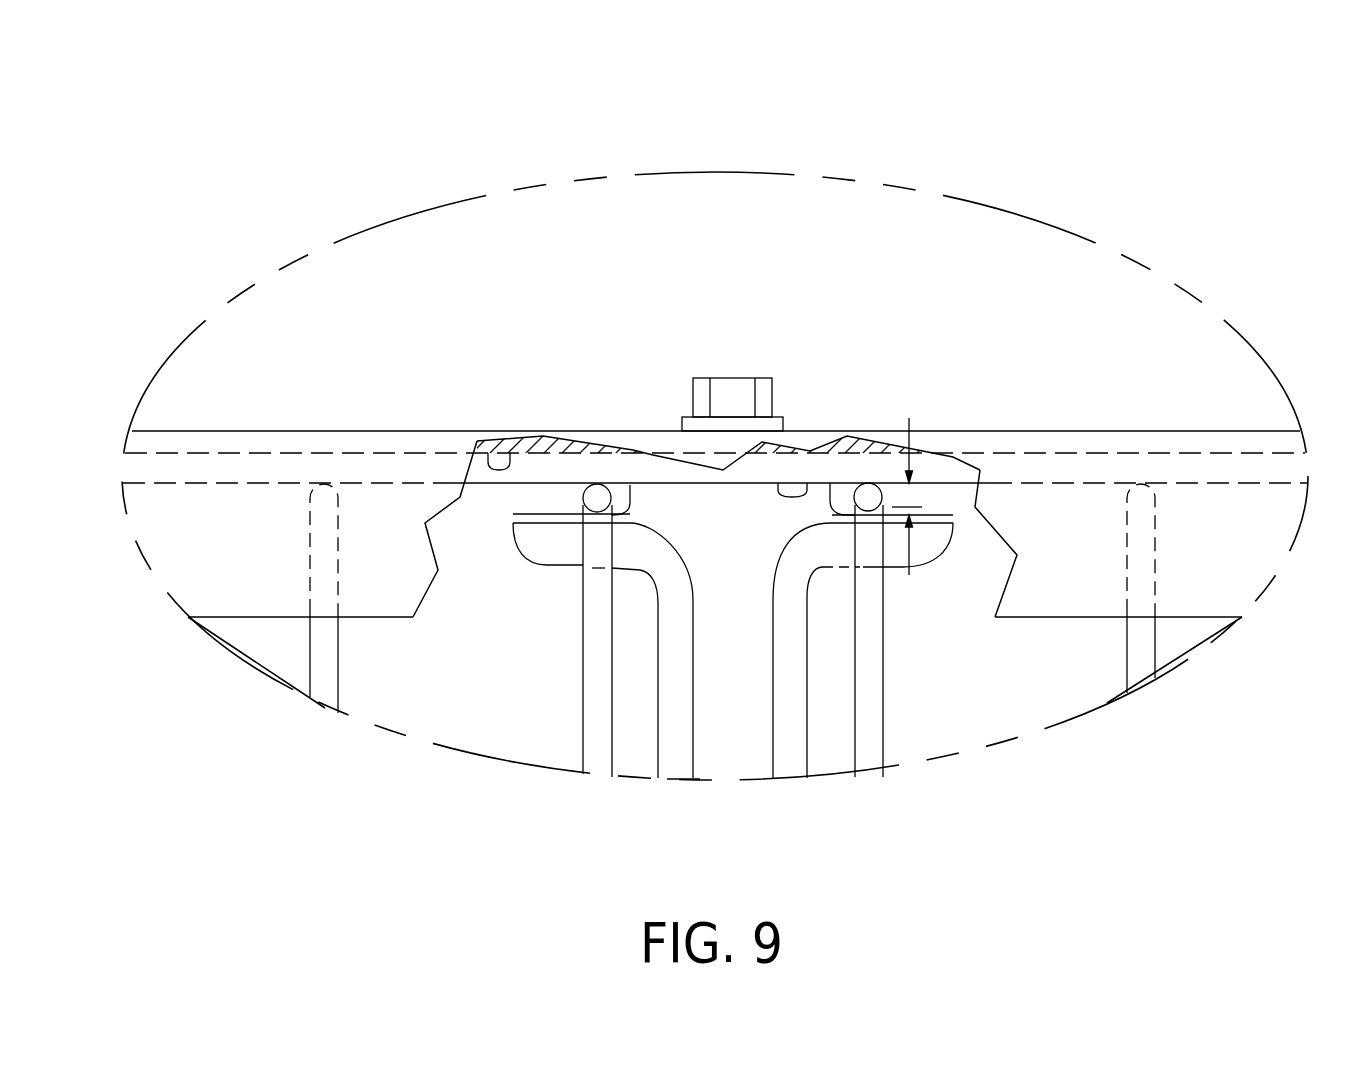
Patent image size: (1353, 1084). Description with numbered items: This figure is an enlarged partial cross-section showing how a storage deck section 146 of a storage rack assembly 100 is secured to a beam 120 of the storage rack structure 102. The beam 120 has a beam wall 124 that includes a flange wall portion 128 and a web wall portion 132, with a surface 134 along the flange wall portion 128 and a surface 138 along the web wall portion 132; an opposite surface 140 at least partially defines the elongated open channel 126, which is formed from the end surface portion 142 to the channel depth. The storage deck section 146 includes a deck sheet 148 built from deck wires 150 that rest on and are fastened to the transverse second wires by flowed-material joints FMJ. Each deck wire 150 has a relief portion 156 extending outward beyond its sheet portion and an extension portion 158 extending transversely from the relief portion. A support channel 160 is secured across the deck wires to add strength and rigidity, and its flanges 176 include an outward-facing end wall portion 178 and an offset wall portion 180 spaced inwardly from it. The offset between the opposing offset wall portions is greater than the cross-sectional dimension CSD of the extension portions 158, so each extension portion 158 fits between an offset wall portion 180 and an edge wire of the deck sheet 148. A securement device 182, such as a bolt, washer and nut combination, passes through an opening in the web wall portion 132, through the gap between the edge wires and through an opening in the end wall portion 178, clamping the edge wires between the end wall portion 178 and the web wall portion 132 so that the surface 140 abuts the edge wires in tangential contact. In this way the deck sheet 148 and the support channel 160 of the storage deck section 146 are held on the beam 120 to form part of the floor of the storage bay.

The storage rack assembly 100 is at (1099, 122).
The storage rack structure 102 is at (1126, 223).
The beam 120 is at (217, 420).
The surface portion 138 is at (262, 430).
The surface portion 134 is at (218, 560).
The beam wall 124 is at (535, 422).
The surface portion 140 is at (485, 437).
The web wall portion 132 is at (873, 447).
The end surface portion 142 is at (248, 618).
The flange wall portion 128 is at (215, 597).
The flowed-material joint FMJ is at (325, 482).
The deck wire 150 is at (322, 672).
The extension portion 158 is at (597, 497).
The offset wall portion 180 is at (543, 514).
The securement device 182 is at (741, 367).
The end wall portion 178 is at (812, 487).
The cross-sectional dimension CSD is at (900, 440).
The elongated open channel 126 is at (455, 590).
The support channel 160 is at (769, 746).
The relief portion 156 is at (588, 592).
The deck sheet 148 is at (551, 765).
The storage deck section 146 is at (886, 797).
The flange 176 is at (820, 586).